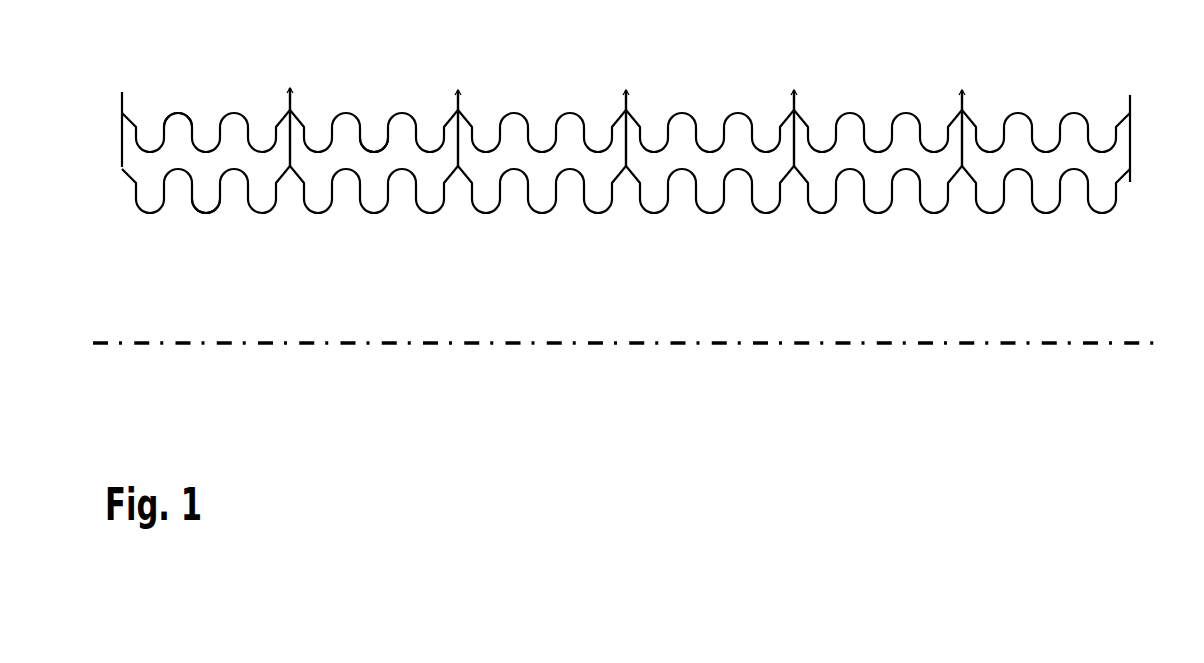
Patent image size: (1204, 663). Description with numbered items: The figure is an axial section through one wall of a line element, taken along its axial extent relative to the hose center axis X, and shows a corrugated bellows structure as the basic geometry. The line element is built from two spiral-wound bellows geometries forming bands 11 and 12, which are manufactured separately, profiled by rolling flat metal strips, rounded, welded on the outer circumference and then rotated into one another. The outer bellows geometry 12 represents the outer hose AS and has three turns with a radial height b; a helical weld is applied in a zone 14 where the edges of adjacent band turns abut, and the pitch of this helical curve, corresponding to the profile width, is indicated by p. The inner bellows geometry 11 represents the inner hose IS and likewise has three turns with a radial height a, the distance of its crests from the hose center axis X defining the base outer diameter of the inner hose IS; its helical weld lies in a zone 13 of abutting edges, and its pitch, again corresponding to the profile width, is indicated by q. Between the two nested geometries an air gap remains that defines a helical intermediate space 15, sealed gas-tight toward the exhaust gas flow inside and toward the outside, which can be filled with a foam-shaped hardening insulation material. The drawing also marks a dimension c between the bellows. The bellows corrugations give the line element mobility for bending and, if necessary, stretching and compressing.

The inner bellows geometry 11 is at (490, 213).
The outer bellows geometry 12 is at (541, 150).
The zone of abutting edges 13 is at (288, 156).
The zone of abutting edges 14 is at (290, 88).
The intermediate space 15 is at (373, 157).
The outer hose AS is at (177, 103).
The inner hose IS is at (194, 223).
The radial height a is at (1130, 167).
The radial height b is at (1130, 113).
The gap between ring segments c is at (122, 167).
The pitch p is at (1128, 75).
The pitch q is at (963, 222).
The hose center axis X is at (639, 351).